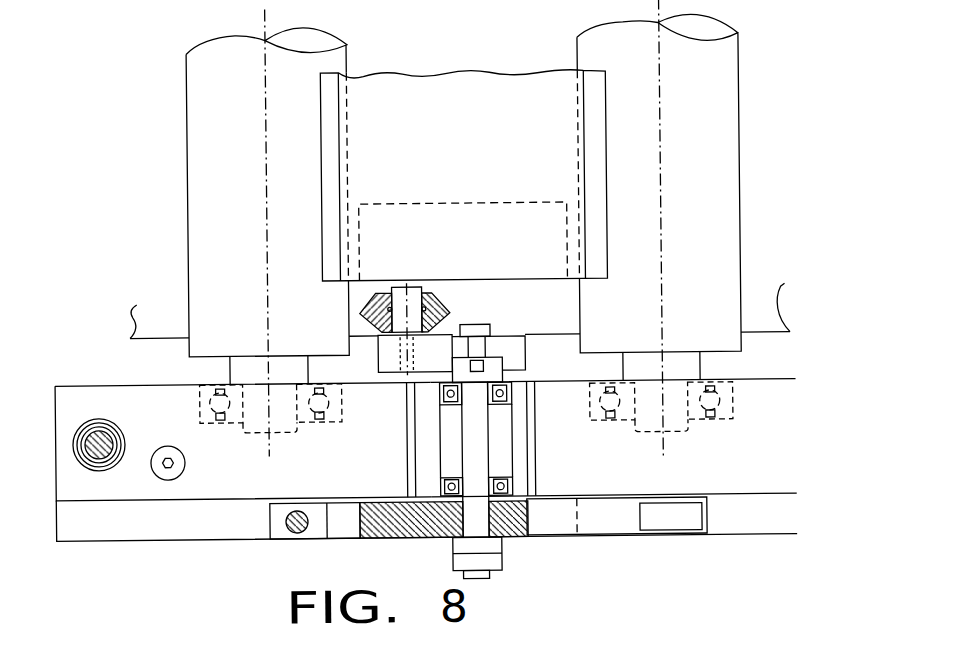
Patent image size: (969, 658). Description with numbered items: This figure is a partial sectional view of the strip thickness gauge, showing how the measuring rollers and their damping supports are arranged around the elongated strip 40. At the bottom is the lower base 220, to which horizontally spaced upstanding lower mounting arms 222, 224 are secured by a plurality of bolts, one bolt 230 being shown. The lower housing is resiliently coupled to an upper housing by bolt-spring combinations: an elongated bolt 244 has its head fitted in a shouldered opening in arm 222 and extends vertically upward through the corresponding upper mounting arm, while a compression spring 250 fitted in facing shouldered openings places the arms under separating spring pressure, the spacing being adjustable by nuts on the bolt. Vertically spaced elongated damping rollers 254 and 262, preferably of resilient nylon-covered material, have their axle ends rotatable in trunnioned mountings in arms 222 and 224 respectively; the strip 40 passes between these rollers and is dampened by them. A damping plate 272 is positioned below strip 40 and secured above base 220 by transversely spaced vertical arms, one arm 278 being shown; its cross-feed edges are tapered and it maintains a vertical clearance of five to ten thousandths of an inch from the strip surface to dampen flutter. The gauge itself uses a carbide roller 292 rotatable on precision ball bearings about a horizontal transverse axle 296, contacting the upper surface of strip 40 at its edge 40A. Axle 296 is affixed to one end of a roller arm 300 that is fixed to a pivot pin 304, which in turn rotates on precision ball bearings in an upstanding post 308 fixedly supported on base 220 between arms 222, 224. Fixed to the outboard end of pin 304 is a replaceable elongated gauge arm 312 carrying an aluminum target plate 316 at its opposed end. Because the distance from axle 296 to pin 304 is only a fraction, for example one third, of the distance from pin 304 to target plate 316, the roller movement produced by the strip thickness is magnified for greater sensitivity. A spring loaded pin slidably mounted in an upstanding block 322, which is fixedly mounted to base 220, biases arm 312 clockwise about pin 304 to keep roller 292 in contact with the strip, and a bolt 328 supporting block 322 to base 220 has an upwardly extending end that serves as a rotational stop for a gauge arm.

The elongated strip 40 is at (464, 299).
The edge of strip 40A is at (363, 331).
The lower base 220 is at (220, 526).
The lower mounting arm 222 is at (270, 483).
The lower mounting arm 224 is at (764, 470).
The bolt 230 is at (163, 476).
The elongated bolt 244 is at (107, 450).
The compression spring 250 is at (89, 416).
The damping roller 254 is at (189, 219).
The damping roller 262 is at (742, 146).
The damping plate 272 is at (324, 141).
The vertical arm 278 is at (346, 237).
The carbide roller 292 is at (368, 301).
The axle 296 is at (395, 358).
The roller arm 300 is at (378, 351).
The pivot pin 304 is at (526, 446).
The upstanding post 308 is at (436, 438).
The gauge arm 312 is at (604, 514).
The target plate 316 is at (680, 516).
The upstanding block 322 is at (268, 516).
The bolt 328 is at (297, 533).